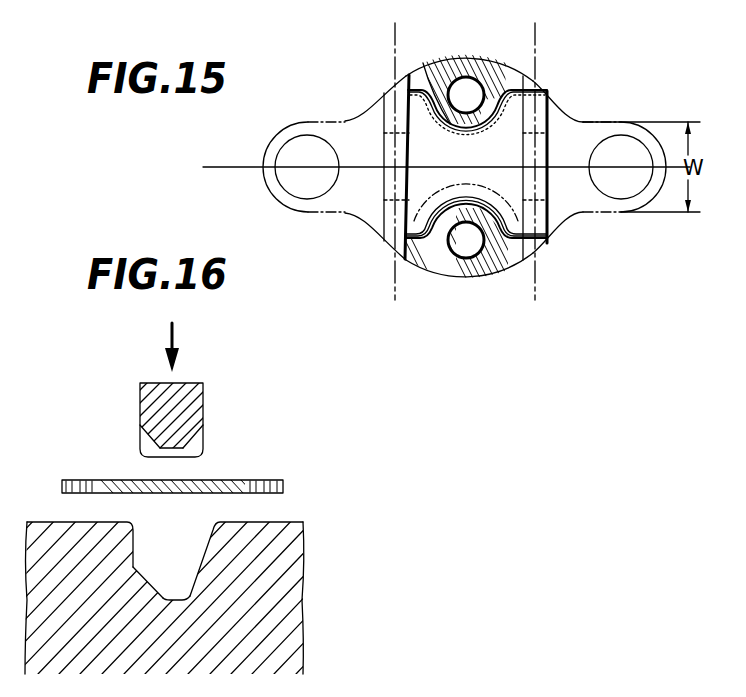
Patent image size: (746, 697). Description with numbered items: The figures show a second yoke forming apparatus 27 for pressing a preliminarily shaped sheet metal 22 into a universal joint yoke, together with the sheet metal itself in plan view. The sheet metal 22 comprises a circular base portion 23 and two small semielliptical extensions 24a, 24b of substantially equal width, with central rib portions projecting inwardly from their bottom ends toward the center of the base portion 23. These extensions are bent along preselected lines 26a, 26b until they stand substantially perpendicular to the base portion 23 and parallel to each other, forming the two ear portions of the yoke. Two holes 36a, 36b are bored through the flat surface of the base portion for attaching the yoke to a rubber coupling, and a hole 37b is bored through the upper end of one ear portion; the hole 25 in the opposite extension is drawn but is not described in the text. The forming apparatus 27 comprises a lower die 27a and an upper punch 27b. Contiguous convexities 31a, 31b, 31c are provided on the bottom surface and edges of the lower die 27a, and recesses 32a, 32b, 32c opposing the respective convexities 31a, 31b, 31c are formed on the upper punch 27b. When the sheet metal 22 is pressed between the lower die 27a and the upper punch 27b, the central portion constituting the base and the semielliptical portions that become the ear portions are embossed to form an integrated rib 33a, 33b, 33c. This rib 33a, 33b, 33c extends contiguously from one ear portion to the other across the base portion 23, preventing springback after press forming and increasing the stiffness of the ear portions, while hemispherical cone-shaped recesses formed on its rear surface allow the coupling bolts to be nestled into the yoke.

In FIG. 15, the sheet metal 22 is at (440, 177).
In FIG. 16, the sheet metal 22 is at (240, 493).
In FIG. 15, the circular base portion 23 is at (508, 80).
In FIG. 15, the semielliptical extension 24a is at (350, 220).
In FIG. 15, the semielliptical extension 24b is at (582, 222).
In FIG. 15, the hole 25 is at (236, 170).
In FIG. 15, the preselected line 26a is at (394, 70).
In FIG. 15, the preselected line 26b is at (538, 72).
In FIG. 15, the rib 33a is at (427, 58).
In FIG. 15, the rib 33b is at (412, 228).
In FIG. 15, the rib 33c is at (511, 228).
In FIG. 15, the hole 36a is at (466, 258).
In FIG. 15, the hole 36b is at (464, 78).
In FIG. 15, the hole 37b is at (630, 143).
In FIG. 16, the yoke forming apparatus 27 is at (234, 524).
In FIG. 16, the lower die 27a is at (234, 594).
In FIG. 16, the upper punch 27b is at (197, 427).
In FIG. 16, the convexity 31a is at (174, 598).
In FIG. 16, the convexity 31b is at (147, 570).
In FIG. 16, the convexity 31c is at (203, 583).
In FIG. 16, the recess 32a is at (178, 453).
In FIG. 16, the recess 32b is at (143, 428).
In FIG. 16, the recess 32c is at (198, 436).